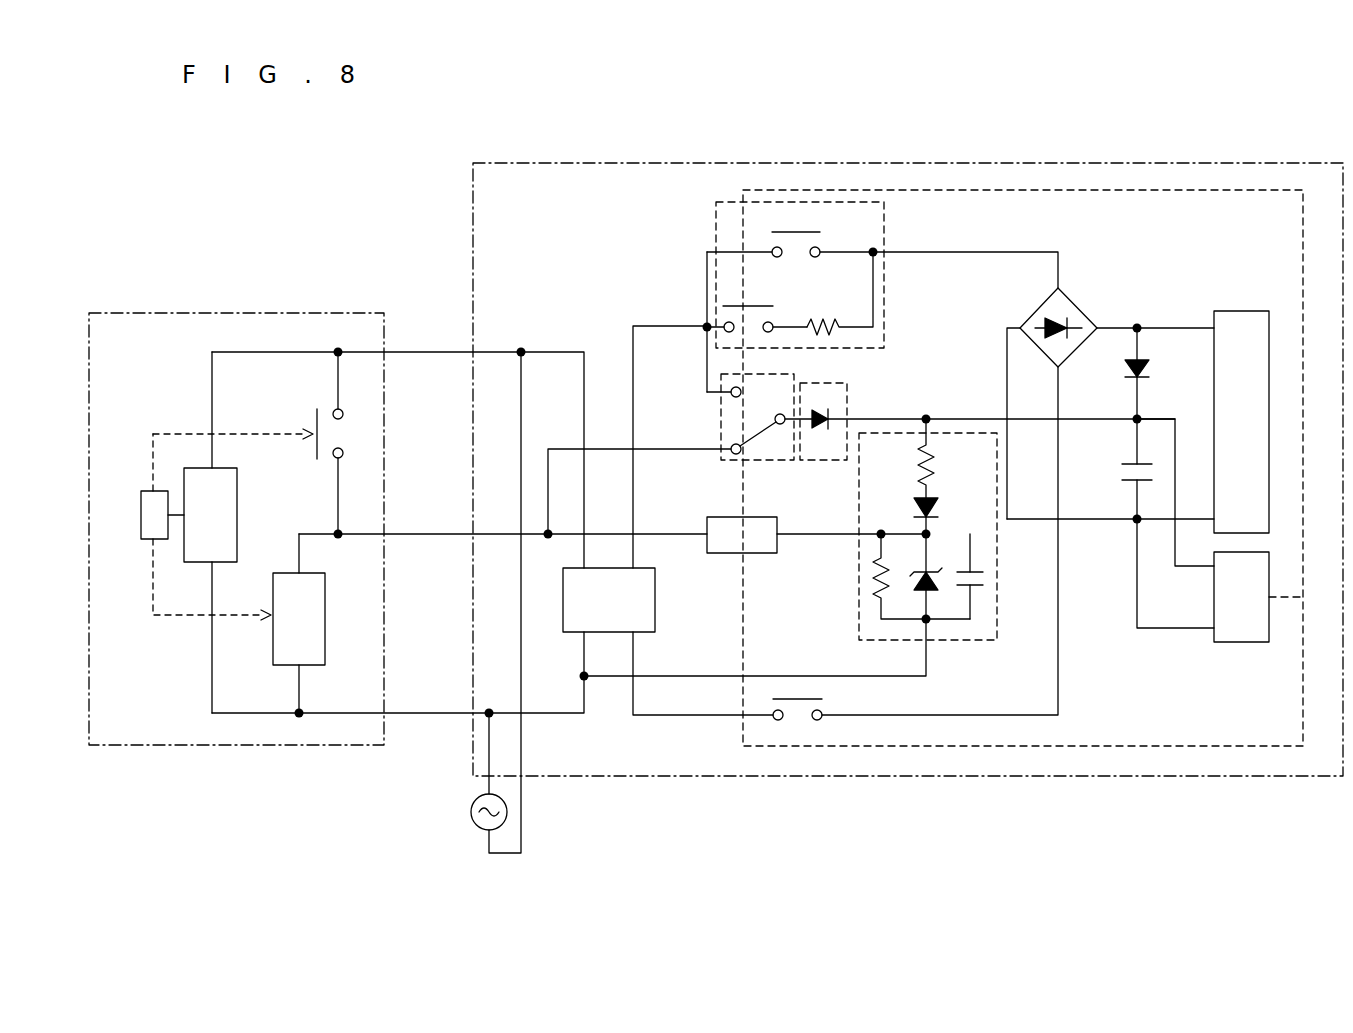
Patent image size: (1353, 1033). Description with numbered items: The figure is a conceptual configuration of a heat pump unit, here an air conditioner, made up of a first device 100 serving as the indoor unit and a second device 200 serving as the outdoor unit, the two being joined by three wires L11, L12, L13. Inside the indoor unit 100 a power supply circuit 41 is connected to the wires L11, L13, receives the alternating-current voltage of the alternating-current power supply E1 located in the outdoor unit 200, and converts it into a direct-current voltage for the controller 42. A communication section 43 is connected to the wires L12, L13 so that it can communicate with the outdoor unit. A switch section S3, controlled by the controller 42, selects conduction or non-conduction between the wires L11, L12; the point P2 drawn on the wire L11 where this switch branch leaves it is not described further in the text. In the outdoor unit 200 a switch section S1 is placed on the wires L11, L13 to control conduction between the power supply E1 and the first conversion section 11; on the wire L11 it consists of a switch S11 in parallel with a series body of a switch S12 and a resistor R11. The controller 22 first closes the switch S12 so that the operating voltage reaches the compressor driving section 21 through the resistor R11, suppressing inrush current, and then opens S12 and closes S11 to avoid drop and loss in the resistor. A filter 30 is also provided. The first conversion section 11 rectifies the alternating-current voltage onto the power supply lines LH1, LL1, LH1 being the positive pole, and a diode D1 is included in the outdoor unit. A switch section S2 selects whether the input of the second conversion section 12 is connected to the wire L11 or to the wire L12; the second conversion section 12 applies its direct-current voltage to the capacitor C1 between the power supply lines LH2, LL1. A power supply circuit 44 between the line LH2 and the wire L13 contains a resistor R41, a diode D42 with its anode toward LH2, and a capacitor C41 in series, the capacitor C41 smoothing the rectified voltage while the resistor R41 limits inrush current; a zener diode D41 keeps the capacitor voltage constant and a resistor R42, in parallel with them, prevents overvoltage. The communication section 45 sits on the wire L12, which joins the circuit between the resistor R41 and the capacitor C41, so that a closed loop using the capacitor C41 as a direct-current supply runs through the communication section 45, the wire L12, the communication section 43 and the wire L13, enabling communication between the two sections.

The first device 100 is at (251, 312).
The second device 200 is at (1251, 162).
The connection point P2 is at (339, 348).
The wire L11 is at (420, 351).
The wire L12 is at (420, 533).
The wire L13 is at (420, 710).
The switch section S3 is at (248, 469).
The power supply circuit 41 is at (237, 514).
The controller 42 is at (141, 519).
The communication section 43 is at (325, 638).
The filter 30 is at (655, 612).
The alternating-current power supply E1 is at (470, 814).
The switch section S1 is at (884, 292).
The switch S11 is at (796, 232).
The switch S12 is at (770, 294).
The resistor R11 is at (824, 318).
The switch section S2 is at (760, 460).
The second conversion section 12 is at (847, 387).
The communication section 45 is at (765, 524).
The power supply circuit 44 is at (997, 588).
The resistor R41 is at (955, 458).
The diode D42 is at (952, 514).
The resistor R42 is at (864, 583).
The zener diode D41 is at (912, 596).
The capacitor C41 is at (975, 596).
The first conversion section 11 is at (1040, 304).
The power supply line LH1 is at (1110, 322).
The power supply line LH2 is at (1085, 418).
The diode D1 is at (1152, 372).
The capacitor C1 is at (1122, 473).
The power supply line LL1 is at (1096, 520).
The compressor driving section 21 is at (1244, 311).
The controller 22 is at (1244, 642).